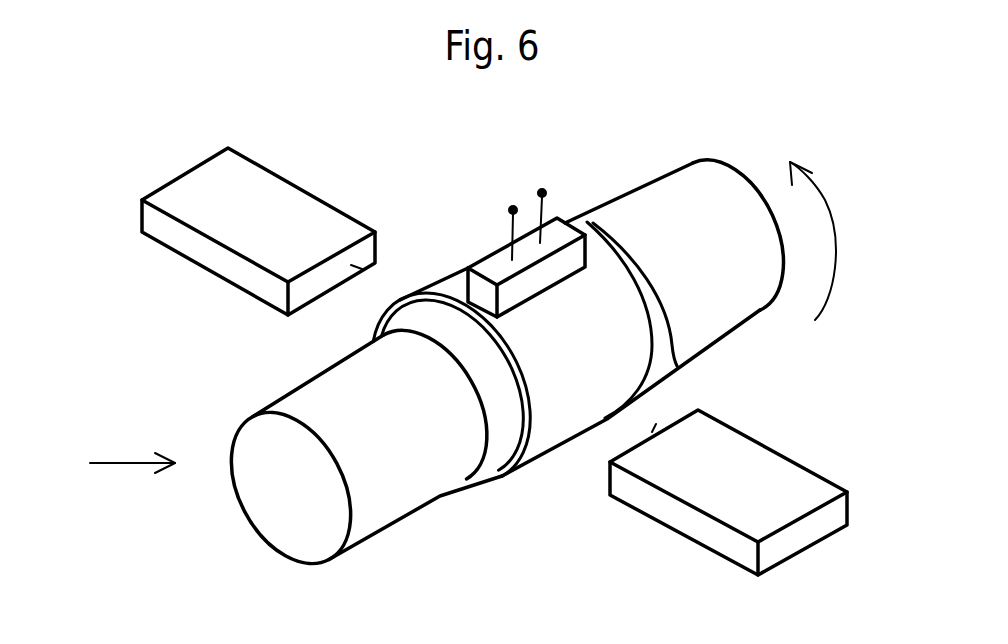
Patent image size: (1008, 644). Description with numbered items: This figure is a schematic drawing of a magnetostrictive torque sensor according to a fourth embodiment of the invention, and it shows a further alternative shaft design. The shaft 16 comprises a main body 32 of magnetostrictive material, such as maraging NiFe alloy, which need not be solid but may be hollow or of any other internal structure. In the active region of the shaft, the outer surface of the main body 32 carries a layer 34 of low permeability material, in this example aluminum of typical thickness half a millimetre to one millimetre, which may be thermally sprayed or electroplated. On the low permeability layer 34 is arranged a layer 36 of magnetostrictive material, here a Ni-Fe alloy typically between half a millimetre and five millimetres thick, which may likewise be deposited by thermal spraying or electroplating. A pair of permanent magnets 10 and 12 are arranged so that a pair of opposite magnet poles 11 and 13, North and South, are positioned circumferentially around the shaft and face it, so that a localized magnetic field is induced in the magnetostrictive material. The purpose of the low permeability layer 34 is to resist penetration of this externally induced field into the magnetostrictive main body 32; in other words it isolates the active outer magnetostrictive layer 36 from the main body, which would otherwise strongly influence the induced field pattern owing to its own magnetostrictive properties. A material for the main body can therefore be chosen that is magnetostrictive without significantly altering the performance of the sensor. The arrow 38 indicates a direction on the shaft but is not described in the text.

The permanent magnet 10 is at (223, 260).
The magnet pole 11 is at (351, 265).
The permanent magnet 12 is at (697, 525).
The magnet pole 13 is at (652, 432).
The shaft 16 is at (82, 477).
The main body 32 is at (314, 408).
The low permeability layer 34 is at (509, 437).
The magnetostrictive layer 36 is at (622, 362).
The torque direction arrow 38 is at (835, 241).